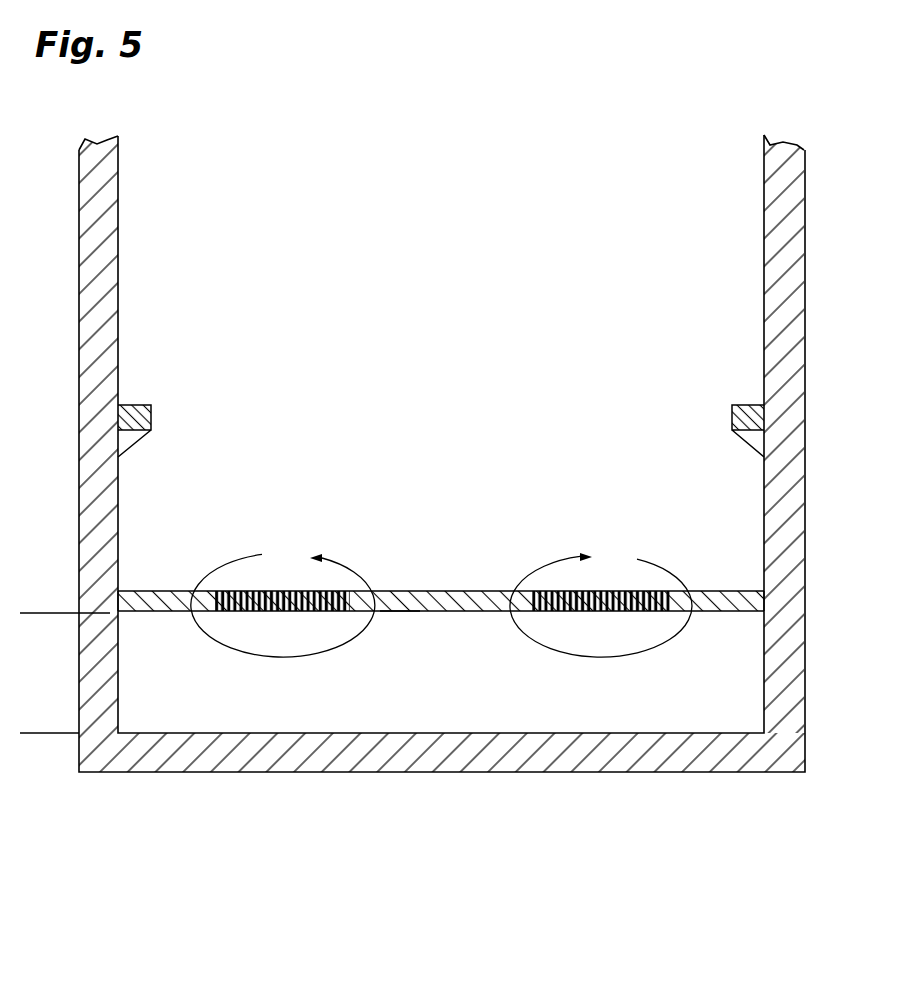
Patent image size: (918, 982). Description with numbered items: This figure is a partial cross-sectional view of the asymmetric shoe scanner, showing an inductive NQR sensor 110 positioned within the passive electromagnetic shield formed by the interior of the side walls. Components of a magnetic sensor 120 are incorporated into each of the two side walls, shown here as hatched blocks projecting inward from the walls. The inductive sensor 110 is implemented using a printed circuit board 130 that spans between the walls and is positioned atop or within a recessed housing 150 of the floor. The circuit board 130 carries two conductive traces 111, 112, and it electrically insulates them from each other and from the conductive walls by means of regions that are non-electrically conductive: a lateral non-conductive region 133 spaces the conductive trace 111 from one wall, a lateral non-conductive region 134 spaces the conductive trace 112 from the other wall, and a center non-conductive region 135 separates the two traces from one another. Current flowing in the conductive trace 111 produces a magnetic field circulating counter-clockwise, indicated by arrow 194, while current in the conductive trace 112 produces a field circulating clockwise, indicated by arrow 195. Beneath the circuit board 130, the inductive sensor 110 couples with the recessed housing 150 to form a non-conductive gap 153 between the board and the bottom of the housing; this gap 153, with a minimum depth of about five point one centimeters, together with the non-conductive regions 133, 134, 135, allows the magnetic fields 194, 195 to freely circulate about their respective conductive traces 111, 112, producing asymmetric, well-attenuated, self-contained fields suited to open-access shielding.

The inductive sensor 110 is at (315, 627).
The conductive trace 111 is at (250, 591).
The conductive trace 112 is at (567, 591).
The magnetic sensor 120 is at (172, 398).
The printed circuit board 130 is at (453, 580).
The lateral non-conductive region 133 is at (150, 612).
The lateral non-conductive region 134 is at (717, 612).
The center non-conductive region 135 is at (403, 612).
The recessed housing 150 is at (412, 692).
The non-conductive gap 153 is at (26, 613).
The arrow 194 is at (352, 568).
The arrow 195 is at (673, 575).